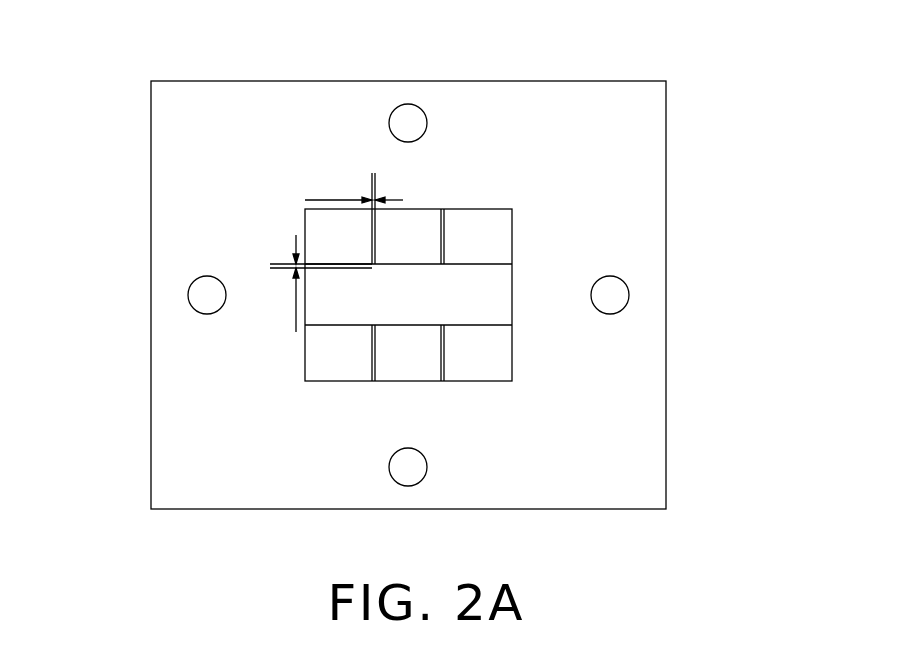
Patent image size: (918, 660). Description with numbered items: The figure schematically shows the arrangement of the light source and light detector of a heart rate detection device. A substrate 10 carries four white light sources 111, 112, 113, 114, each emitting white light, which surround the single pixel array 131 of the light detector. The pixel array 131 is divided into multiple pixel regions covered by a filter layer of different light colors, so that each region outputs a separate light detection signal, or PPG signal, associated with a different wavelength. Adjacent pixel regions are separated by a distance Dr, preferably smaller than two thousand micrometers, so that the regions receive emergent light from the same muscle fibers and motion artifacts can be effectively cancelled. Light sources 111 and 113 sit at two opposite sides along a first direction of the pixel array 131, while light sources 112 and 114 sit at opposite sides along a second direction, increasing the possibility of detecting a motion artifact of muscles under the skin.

The substrate 10 is at (666, 167).
The white light source 111 is at (188, 296).
The white light source 112 is at (408, 104).
The white light source 113 is at (629, 295).
The white light source 114 is at (411, 486).
The single pixel array 131 is at (305, 361).